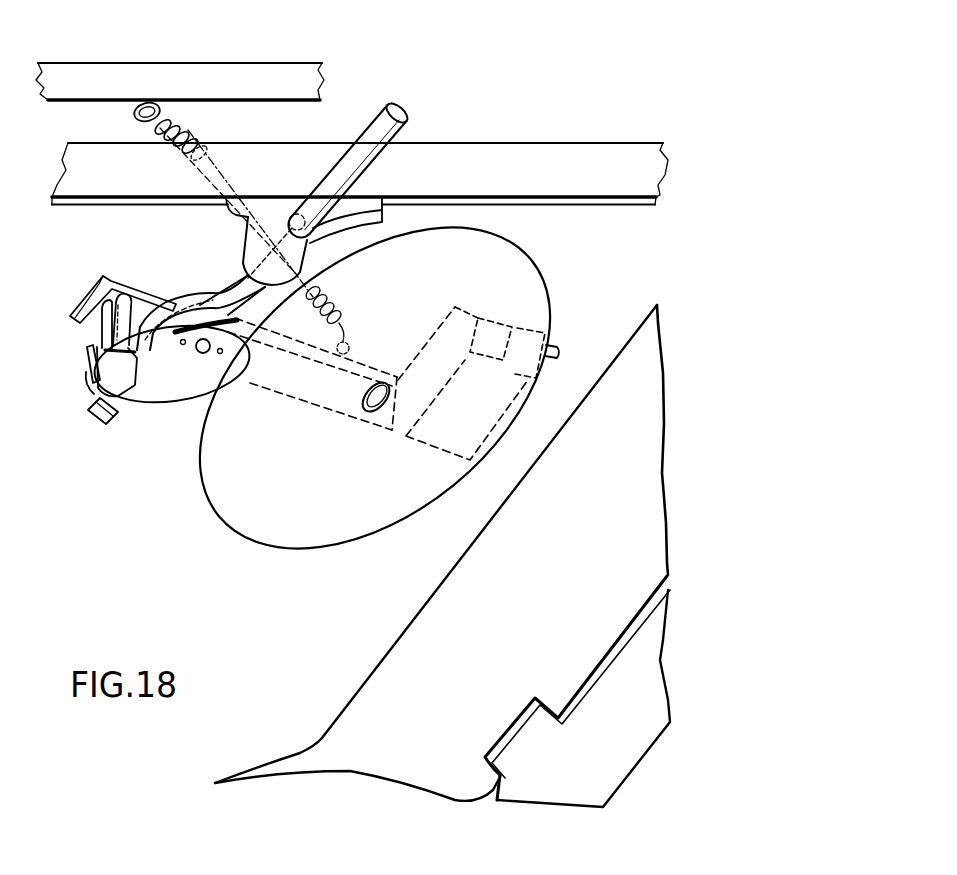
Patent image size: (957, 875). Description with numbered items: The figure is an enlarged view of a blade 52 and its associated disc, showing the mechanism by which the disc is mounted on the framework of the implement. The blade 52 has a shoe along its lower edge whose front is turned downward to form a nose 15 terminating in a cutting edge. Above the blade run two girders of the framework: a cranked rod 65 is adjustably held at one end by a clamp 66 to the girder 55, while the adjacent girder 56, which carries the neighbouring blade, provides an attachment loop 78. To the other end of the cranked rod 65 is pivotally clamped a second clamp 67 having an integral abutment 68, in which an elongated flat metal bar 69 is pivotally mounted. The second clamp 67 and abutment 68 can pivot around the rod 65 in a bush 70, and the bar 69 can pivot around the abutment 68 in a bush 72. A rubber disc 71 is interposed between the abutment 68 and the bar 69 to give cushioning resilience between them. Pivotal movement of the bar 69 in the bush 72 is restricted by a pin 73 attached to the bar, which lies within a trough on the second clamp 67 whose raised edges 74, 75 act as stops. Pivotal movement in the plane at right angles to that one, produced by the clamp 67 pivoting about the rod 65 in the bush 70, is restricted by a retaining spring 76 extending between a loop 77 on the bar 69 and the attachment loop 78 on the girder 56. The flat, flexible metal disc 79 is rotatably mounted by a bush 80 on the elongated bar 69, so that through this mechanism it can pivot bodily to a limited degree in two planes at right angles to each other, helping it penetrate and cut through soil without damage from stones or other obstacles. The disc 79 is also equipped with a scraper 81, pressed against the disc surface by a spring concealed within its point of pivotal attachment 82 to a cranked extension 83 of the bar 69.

The nose 15 is at (268, 777).
The blade 52 is at (400, 652).
The girder 55 is at (483, 162).
The girder 56 is at (262, 74).
The cranked rod 65 is at (373, 136).
The clamp 66 is at (246, 255).
The second clamp 67 is at (108, 418).
The abutment 68 is at (170, 388).
The elongated flat metal bar 69 is at (310, 400).
The bush 70 is at (100, 362).
The rubber disc 71 is at (207, 290).
The bush 72 is at (203, 353).
The pin 73 is at (90, 297).
The raised edge 74 is at (108, 328).
The raised edge 75 is at (95, 385).
The retaining spring 76 is at (188, 132).
The loop 77 is at (348, 348).
The attachment loop 78 is at (136, 106).
The flat flexible metal disc 79 is at (227, 506).
The bush 80 is at (373, 413).
The scraper 81 is at (450, 450).
The point of pivotal attachment 82 is at (522, 322).
The cranked extension 83 is at (484, 318).